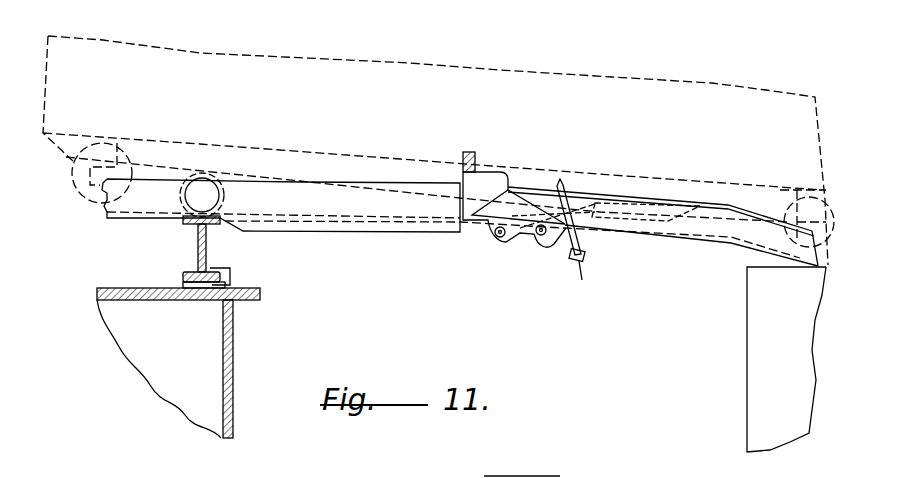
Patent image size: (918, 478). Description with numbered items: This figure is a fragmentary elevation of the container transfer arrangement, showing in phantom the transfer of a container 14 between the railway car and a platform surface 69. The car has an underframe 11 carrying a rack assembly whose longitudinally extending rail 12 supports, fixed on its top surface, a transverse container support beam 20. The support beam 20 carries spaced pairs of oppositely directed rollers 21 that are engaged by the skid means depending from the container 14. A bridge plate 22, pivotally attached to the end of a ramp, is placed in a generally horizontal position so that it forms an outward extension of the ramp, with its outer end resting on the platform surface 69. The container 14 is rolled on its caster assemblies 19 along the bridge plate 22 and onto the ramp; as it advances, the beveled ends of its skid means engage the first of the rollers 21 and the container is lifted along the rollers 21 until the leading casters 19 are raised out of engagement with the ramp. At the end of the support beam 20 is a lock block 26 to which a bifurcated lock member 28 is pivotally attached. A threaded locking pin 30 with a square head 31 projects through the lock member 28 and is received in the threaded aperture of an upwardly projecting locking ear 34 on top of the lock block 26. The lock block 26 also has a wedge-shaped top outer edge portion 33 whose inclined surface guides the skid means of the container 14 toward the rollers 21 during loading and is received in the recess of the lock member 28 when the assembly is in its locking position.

The container 14 is at (107, 40).
The underframe 11 is at (236, 350).
The rail 12 is at (196, 240).
The roller 21 is at (199, 177).
The container support beam 20 is at (325, 207).
The locking ear 34 is at (463, 153).
The lock block 26 is at (478, 173).
The wedge-shaped top outer edge portion 33 is at (503, 181).
The bridge plate 22 is at (686, 230).
The lock member 28 is at (578, 228).
The square head 31 is at (584, 277).
The locking pin 30 is at (568, 244).
The caster assembly 19 is at (792, 200).
The platform surface 69 is at (758, 262).